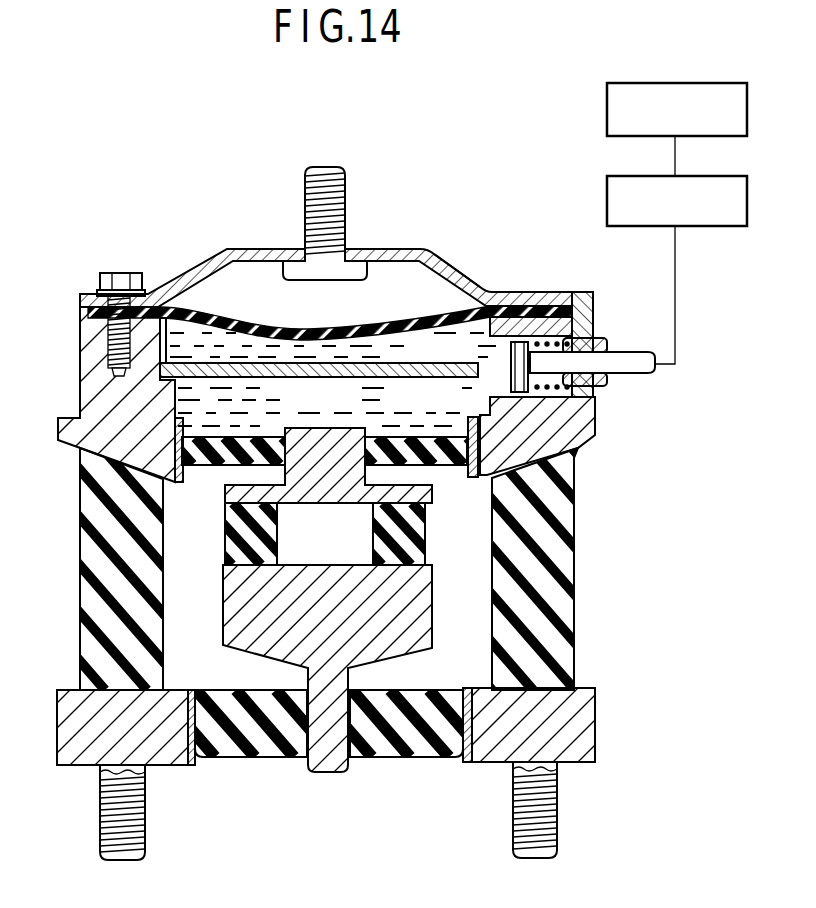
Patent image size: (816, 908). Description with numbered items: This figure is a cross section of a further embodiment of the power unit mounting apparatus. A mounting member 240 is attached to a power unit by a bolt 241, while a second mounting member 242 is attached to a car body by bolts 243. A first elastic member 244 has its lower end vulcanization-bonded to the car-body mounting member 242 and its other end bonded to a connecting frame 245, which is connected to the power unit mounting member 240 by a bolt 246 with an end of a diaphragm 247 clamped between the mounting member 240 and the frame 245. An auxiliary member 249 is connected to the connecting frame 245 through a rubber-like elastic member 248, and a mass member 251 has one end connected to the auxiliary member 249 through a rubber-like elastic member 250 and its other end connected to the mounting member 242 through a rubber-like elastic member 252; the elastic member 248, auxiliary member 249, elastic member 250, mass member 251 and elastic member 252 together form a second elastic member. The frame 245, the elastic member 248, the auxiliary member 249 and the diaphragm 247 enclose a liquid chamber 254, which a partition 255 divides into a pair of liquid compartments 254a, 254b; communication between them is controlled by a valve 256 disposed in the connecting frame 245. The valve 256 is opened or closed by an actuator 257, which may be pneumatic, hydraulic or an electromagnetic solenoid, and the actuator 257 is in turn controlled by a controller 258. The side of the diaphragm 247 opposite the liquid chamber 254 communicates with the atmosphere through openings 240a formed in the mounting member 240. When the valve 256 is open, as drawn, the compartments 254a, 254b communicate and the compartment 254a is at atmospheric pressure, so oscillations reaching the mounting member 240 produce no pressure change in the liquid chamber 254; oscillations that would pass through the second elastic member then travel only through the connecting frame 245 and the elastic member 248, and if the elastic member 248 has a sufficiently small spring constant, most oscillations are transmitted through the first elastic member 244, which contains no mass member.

The mounting member 240 is at (400, 240).
The openings 240a is at (460, 275).
The bolt 241 is at (345, 186).
The mounting member 242 is at (80, 748).
The bolts 243 is at (145, 832).
The first elastic member 244 is at (563, 552).
The connecting frame 245 is at (90, 360).
The bolt 246 is at (120, 275).
The diaphragm 247 is at (232, 320).
The rubber-like elastic member 248 is at (200, 462).
The auxiliary member 249 is at (340, 462).
The rubber-like elastic member 250 is at (395, 537).
The mass member 251 is at (410, 617).
The rubber-like elastic member 252 is at (390, 745).
The liquid chamber 254 is at (345, 411).
The liquid compartment 254a is at (450, 411).
The liquid compartment 254b is at (470, 361).
The partition 255 is at (185, 345).
The valve 256 is at (552, 360).
The actuator 257 is at (607, 202).
The controller 258 is at (607, 110).